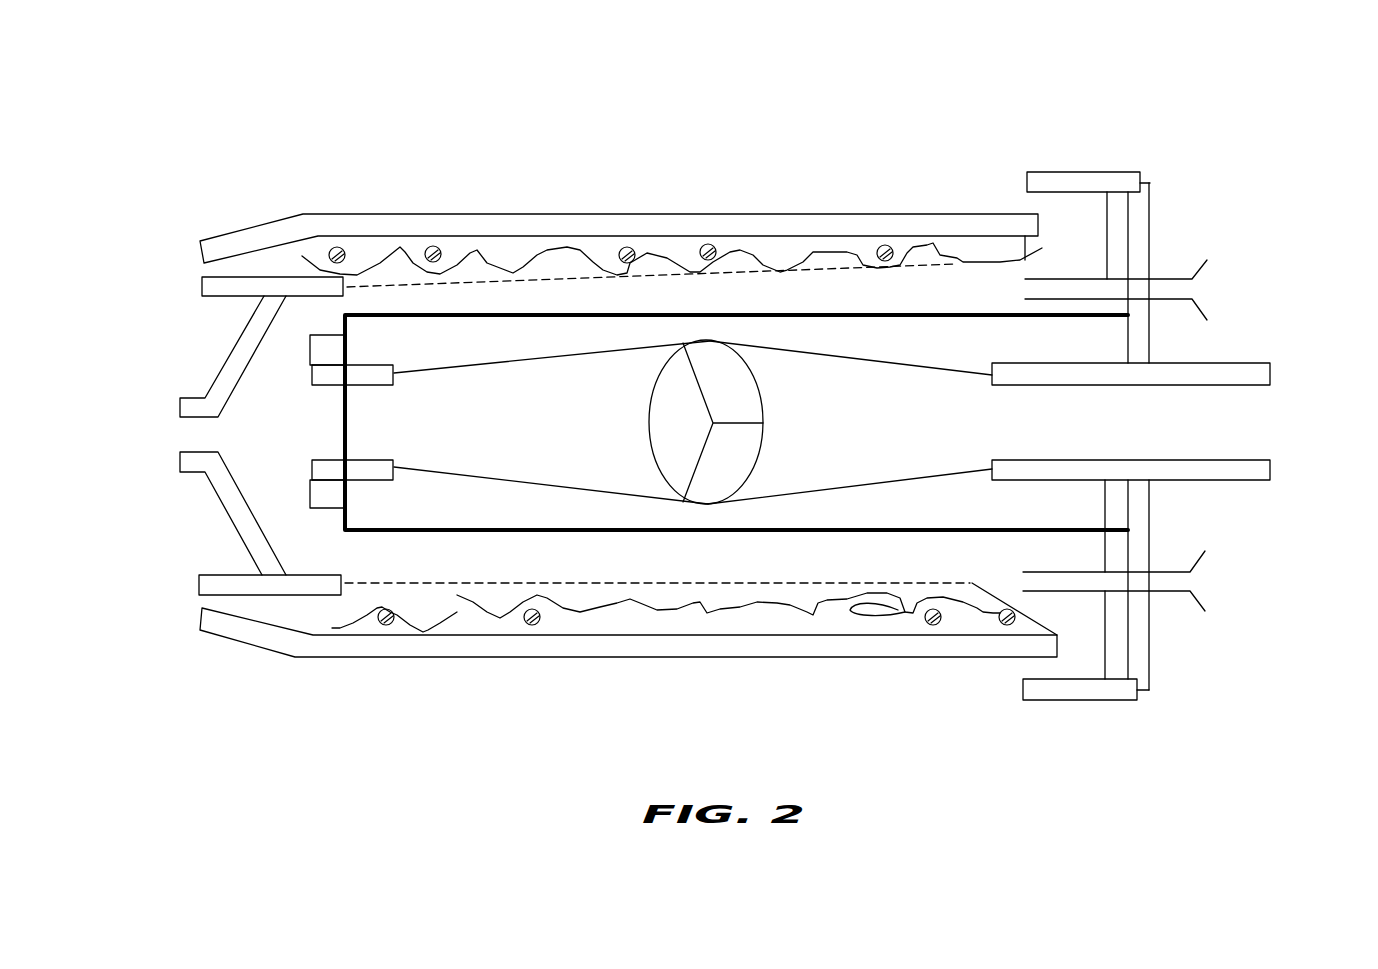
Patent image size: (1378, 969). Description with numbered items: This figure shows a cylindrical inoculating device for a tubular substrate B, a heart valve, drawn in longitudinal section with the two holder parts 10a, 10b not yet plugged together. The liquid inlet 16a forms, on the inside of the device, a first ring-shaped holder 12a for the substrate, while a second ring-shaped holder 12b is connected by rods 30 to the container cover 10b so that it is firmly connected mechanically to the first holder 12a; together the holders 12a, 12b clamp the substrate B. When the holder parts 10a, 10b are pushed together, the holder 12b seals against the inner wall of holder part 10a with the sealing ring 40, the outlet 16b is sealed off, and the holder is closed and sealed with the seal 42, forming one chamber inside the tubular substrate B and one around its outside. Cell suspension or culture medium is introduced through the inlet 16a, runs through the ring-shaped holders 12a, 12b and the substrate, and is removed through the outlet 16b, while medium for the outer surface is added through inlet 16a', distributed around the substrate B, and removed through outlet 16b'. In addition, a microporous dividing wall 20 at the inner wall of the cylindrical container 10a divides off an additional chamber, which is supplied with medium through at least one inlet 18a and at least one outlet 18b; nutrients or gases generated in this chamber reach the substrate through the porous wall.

The holder part 10a is at (595, 214).
The holder part 10b is at (1095, 180).
The first ring-shaped holder 12a is at (1030, 385).
The second ring-shaped holder 12b is at (324, 371).
The liquid inlet 16a is at (1318, 432).
The inlet 16a' is at (1161, 290).
The outlet 16b is at (128, 437).
The outlet 16b' is at (1160, 581).
The inlet 18a is at (186, 268).
The outlet 18b is at (186, 601).
The microporous dividing wall 20 is at (477, 278).
The rods 30 is at (818, 315).
The sealing ring 40 is at (320, 355).
The seal 42 is at (1118, 233).
The tubular substrate B is at (535, 483).